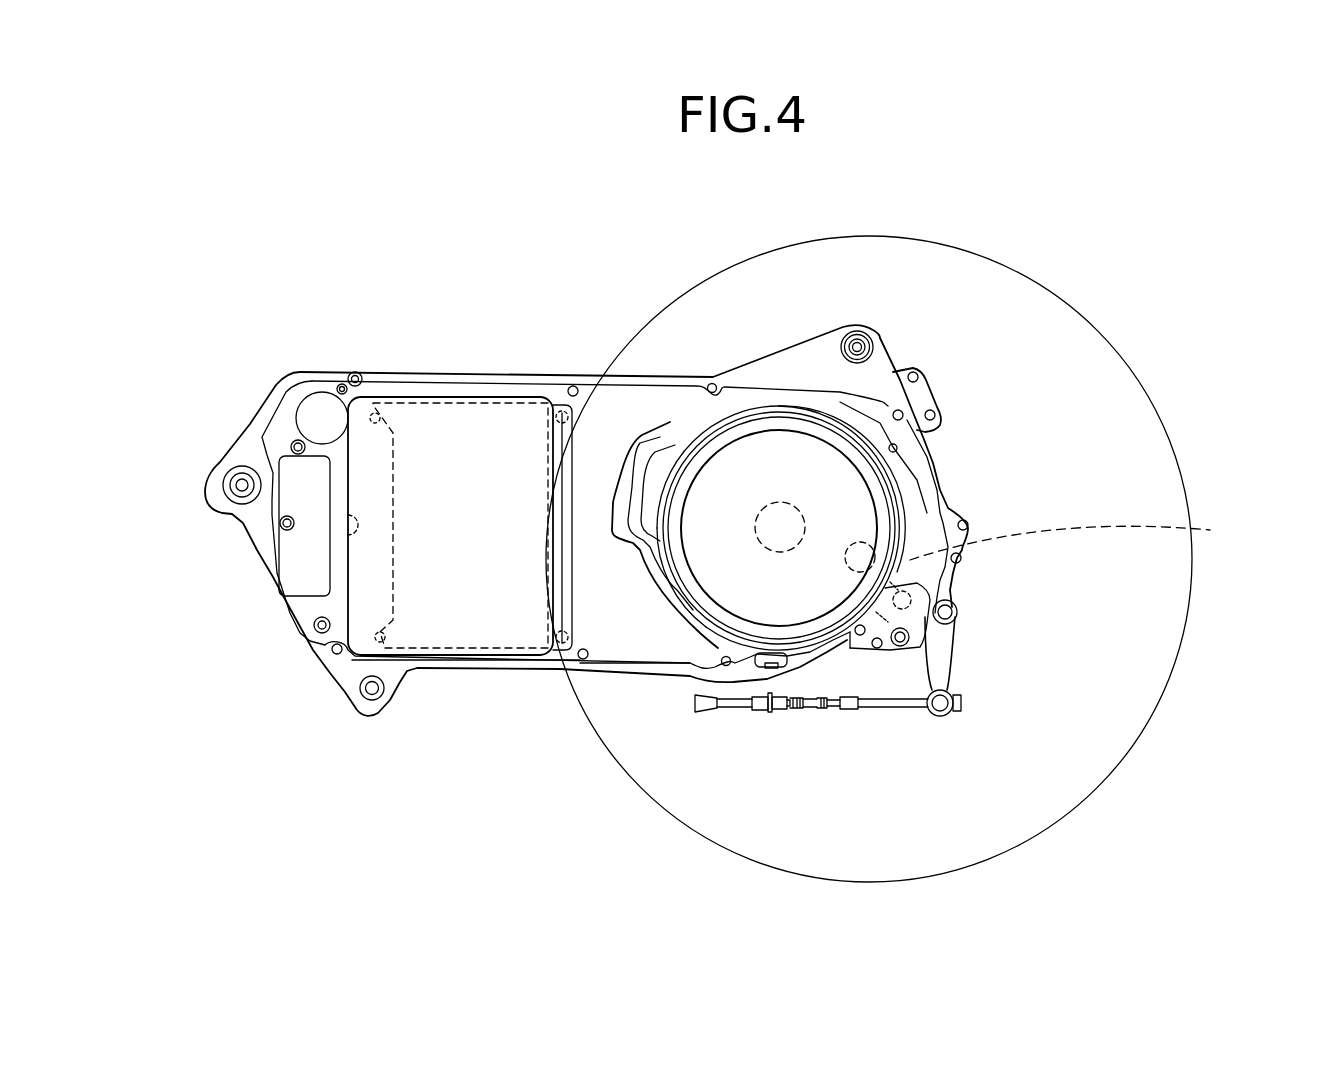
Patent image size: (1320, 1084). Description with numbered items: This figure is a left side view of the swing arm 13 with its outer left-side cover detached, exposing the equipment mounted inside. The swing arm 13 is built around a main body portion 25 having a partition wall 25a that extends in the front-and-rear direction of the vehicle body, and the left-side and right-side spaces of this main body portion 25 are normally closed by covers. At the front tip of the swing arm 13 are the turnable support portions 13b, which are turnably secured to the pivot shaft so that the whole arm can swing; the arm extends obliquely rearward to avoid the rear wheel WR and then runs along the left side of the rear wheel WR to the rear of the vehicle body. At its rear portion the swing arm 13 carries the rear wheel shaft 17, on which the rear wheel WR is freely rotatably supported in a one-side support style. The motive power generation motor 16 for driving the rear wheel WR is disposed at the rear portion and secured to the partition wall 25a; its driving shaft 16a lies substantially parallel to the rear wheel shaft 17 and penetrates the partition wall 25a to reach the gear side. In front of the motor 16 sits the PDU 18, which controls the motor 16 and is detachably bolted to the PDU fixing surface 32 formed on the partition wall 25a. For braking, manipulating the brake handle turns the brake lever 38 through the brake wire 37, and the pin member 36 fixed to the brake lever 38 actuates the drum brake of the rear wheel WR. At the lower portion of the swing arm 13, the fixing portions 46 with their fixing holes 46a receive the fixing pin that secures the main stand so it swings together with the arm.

The swing arm 13 is at (418, 373).
The turnable support portion 13b is at (233, 498).
The motive power generation motor 16 is at (853, 513).
The driving shaft 16a is at (788, 517).
The rear wheel shaft 17 is at (1076, 539).
The PDU 18 is at (497, 628).
The main body portion 25 is at (614, 414).
The partition wall 25a is at (633, 626).
The PDU fixing surface 32 is at (480, 455).
The pin member 36 is at (947, 628).
The brake wire 37 is at (735, 706).
The brake lever 38 is at (940, 665).
The fixing portion 46 is at (362, 708).
The fixing hole 46a is at (373, 694).
The rear wheel WR is at (1155, 663).